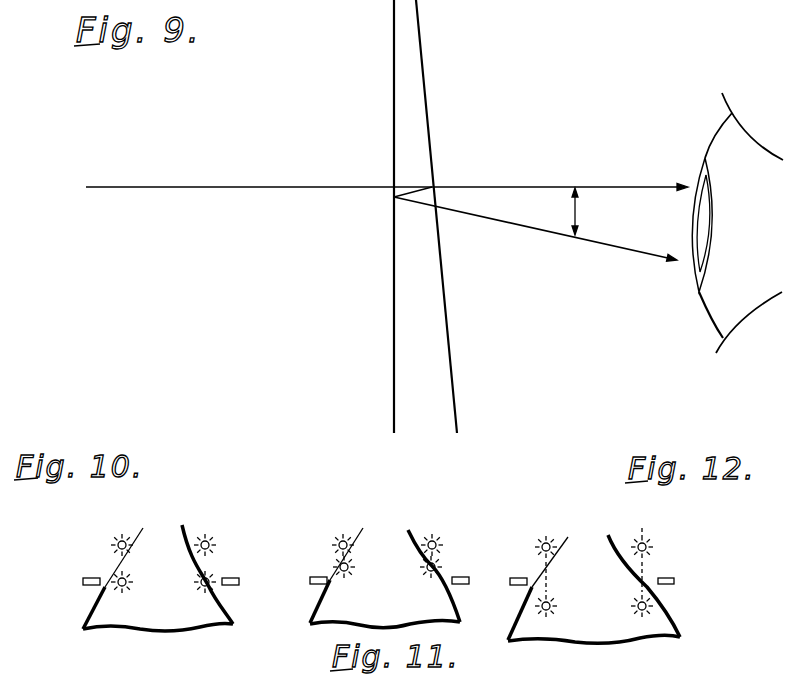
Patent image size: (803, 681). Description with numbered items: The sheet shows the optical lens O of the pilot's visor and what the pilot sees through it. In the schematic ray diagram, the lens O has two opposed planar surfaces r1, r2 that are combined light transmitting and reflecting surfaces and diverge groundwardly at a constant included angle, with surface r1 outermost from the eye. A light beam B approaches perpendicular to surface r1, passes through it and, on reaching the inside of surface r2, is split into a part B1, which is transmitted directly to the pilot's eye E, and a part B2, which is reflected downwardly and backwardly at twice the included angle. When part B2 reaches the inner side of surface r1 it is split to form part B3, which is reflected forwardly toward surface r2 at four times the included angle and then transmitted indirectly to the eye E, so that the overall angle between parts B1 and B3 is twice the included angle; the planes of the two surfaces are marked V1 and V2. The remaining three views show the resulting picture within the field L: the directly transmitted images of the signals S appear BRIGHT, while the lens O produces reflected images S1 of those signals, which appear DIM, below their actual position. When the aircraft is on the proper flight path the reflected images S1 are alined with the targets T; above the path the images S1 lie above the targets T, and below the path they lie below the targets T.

In FIG. 9, the light beam B is at (102, 185).
In FIG. 9, the directly transmitted beam part B1 is at (605, 184).
In FIG. 9, the reflected beam part B2 is at (404, 190).
In FIG. 9, the indirectly transmitted beam part B3 is at (400, 200).
In FIG. 9, the pilot's eye E is at (712, 122).
In FIG. 9, the optical lens O is at (340, 285).
In FIG. 9, the first planar surface r1 is at (394, 340).
In FIG. 9, the second planar surface r2 is at (449, 345).
In FIG. 9, the first vertical plane V1 is at (393, 451).
In FIG. 9, the second vertical plane V2 is at (455, 451).
In FIG. 10, the signals S is at (130, 538).
In FIG. 11, the signals S is at (342, 538).
In FIG. 12, the signals S is at (548, 540).
In FIG. 10, the reflected images of the signals S1 is at (130, 588).
In FIG. 11, the reflected images of the signals S1 is at (348, 572).
In FIG. 12, the reflected images of the signals S1 is at (635, 609).
In FIG. 10, the lamp housing / lens L is at (163, 540).
In FIG. 11, the lamp housing / lens L is at (392, 537).
In FIG. 12, the lamp housing / lens L is at (657, 622).
In FIG. 10, the targets T is at (92, 588).
In FIG. 11, the targets T is at (315, 587).
In FIG. 12, the targets T is at (518, 587).
In FIG. 10, the bright image BRIGHT is at (114, 544).
In FIG. 10, the dim image DIM is at (118, 580).